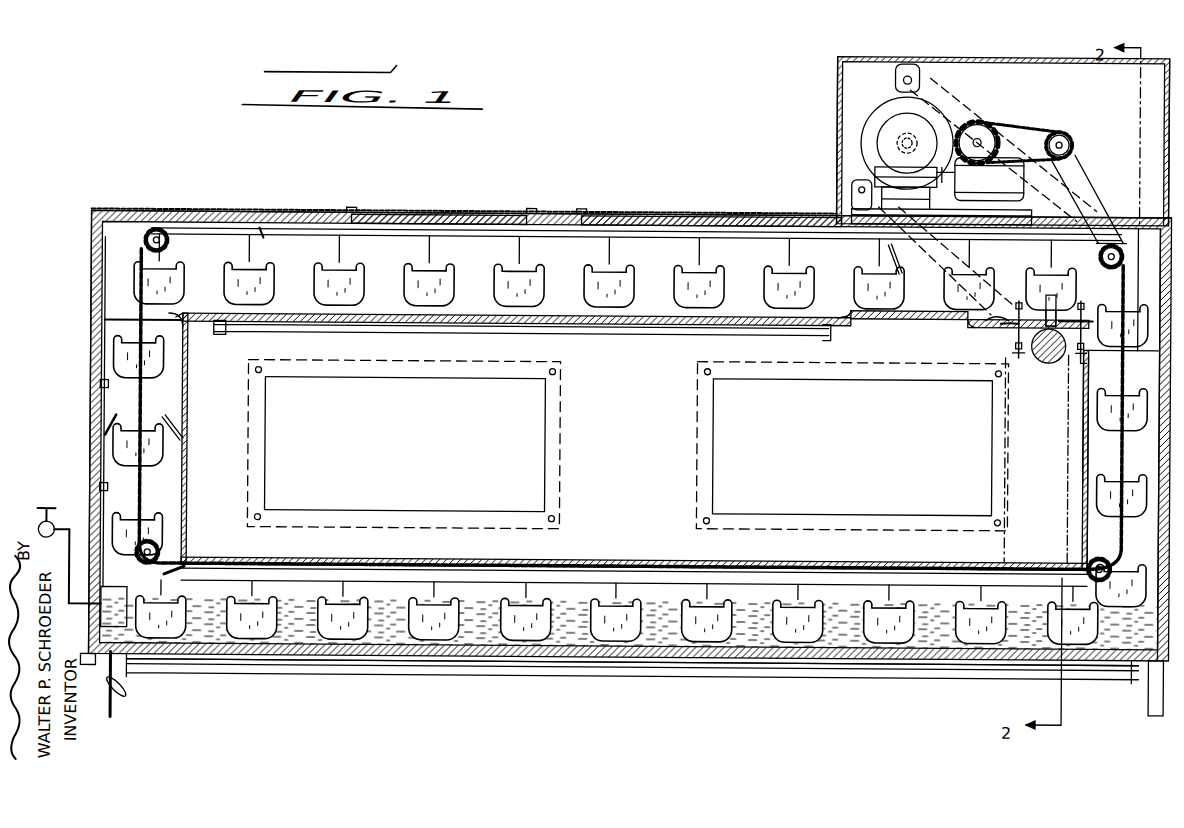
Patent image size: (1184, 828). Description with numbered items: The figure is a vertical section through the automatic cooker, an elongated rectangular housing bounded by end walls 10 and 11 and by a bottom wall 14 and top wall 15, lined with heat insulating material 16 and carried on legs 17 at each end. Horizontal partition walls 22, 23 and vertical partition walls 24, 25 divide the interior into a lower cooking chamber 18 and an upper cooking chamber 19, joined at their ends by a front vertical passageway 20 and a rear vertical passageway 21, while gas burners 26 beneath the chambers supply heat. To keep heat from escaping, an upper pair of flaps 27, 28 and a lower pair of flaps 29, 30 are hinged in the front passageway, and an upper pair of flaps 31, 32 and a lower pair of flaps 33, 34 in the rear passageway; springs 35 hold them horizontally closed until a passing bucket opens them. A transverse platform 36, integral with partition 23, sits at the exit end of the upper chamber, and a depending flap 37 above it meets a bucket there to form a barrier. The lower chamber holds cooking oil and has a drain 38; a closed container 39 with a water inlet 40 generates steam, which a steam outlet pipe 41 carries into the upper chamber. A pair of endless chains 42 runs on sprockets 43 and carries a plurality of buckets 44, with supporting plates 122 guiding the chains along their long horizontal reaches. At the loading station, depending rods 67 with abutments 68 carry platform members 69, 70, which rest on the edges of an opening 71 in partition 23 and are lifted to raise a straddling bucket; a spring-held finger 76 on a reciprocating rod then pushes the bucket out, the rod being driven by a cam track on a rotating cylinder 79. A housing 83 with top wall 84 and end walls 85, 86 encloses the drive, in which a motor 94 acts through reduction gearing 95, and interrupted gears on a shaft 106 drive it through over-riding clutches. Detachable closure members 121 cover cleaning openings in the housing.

The end wall 10 is at (95, 350).
The end wall 11 is at (1140, 226).
The bottom wall 14 is at (508, 658).
The top wall 15 is at (130, 212).
The heat insulating material 16 is at (470, 212).
The legs 17 is at (90, 668).
The lower cooking chamber 18 is at (477, 645).
The upper cooking chamber 19 is at (398, 248).
The front vertical passageway 20 is at (1100, 437).
The rear vertical passageway 21 is at (92, 395).
The horizontal partition wall 22 is at (604, 565).
The horizontal partition wall 23 is at (643, 322).
The vertical partition wall 24 is at (1083, 420).
The vertical partition wall 25 is at (205, 398).
The gas burners 26 is at (606, 334).
The upper flap 27 is at (1086, 360).
The upper flap 28 is at (1145, 352).
The lower flap 29 is at (1090, 452).
The lower flap 30 is at (1152, 430).
The upper flap 31 is at (126, 320).
The upper flap 32 is at (182, 328).
The lower flap 33 is at (117, 418).
The lower flap 34 is at (182, 432).
The springs 35 is at (180, 318).
The platform 36 is at (850, 318).
The depending flap 37 is at (880, 258).
The drain 38 is at (120, 670).
The closed container 39 is at (115, 600).
The water inlet 40 is at (60, 520).
The steam outlet pipe 41 is at (105, 503).
The endless chains 42 is at (148, 246).
The sprockets 43 is at (168, 243).
The buckets 44 is at (680, 290).
The depending rods 67 is at (1112, 318).
The abutments 68 is at (1077, 350).
The platform member 69 is at (990, 320).
The platform member 70 is at (1085, 320).
The opening 71 is at (1015, 322).
The finger 76 is at (1052, 290).
The cylinder 79 is at (1045, 360).
The driving mechanism housing 83 is at (834, 90).
The top wall 84 is at (1007, 55).
The end wall 85 is at (1160, 142).
The end wall 86 is at (835, 156).
The motor 94 is at (1003, 158).
The reduction gearing 95 is at (880, 130).
The shaft 106 is at (976, 133).
The detachable closure members 121 is at (245, 212).
The supporting plates 122 is at (266, 233).